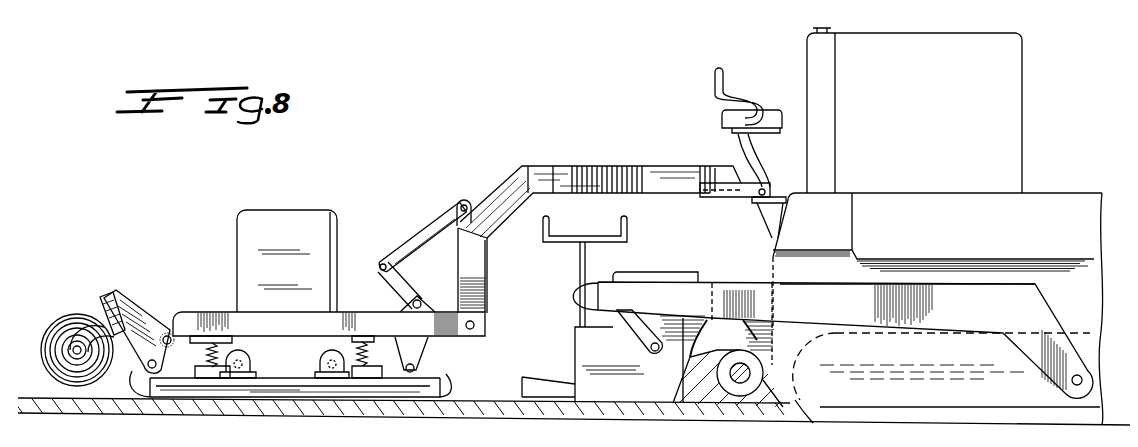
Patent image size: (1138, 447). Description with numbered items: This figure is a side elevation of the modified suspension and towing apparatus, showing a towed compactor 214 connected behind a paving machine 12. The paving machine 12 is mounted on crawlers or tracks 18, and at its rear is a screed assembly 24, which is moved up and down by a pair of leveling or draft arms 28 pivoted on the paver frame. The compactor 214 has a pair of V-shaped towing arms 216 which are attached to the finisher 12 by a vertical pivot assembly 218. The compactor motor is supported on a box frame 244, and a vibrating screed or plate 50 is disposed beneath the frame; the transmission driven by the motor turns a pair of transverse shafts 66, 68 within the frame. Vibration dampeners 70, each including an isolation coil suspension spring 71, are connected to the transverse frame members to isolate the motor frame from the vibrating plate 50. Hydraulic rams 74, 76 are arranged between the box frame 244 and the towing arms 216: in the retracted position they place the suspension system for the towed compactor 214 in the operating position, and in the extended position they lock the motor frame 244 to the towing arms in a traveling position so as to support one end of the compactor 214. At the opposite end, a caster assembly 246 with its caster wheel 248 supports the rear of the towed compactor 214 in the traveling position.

The paving machine 12 is at (1032, 202).
The tracks 18 is at (812, 424).
The screed assembly 24 is at (616, 396).
The leveling or draft arms 28 is at (690, 303).
The vibrating screed or plate 50 is at (304, 419).
The transverse shaft 66 is at (249, 359).
The transverse shaft 68 is at (322, 359).
The vibration dampener 70 is at (366, 342).
The isolation coil suspension spring 71 is at (368, 360).
The hydraulic ram 74 is at (421, 238).
The hydraulic ram 76 is at (193, 343).
The compactor 214 is at (350, 213).
The V-shaped towing arms 216 is at (636, 176).
The vertical pivot assembly 218 is at (766, 189).
The box frame 244 is at (316, 330).
The caster assembly 246 is at (150, 305).
The caster wheel 248 is at (78, 322).